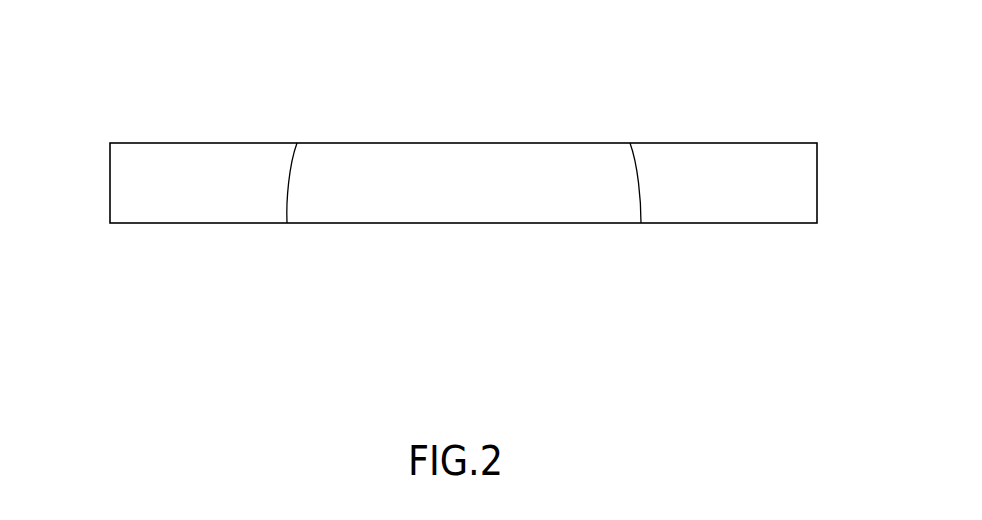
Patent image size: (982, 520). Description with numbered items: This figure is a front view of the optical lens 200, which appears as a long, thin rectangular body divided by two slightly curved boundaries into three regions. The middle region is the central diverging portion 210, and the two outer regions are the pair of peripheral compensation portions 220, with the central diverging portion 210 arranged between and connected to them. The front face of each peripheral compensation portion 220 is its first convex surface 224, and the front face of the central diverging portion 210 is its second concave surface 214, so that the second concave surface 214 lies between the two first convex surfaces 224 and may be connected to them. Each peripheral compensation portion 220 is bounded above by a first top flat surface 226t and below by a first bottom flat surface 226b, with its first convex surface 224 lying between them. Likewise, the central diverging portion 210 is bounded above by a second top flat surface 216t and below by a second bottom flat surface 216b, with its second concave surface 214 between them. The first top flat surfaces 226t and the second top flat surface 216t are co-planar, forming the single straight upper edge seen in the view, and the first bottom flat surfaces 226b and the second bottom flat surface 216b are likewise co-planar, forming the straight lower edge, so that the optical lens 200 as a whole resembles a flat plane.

The optical lens 200 is at (69, 28).
The central diverging portion 210 is at (360, 208).
The second concave surface 214 is at (536, 183).
The second top flat surface 216t is at (440, 141).
The second bottom flat surface 216b is at (462, 226).
The peripheral compensation portion 220 is at (135, 188).
The first convex surface 224 is at (212, 174).
The first top flat surface 226t is at (157, 139).
The first bottom flat surface 226b is at (187, 226).